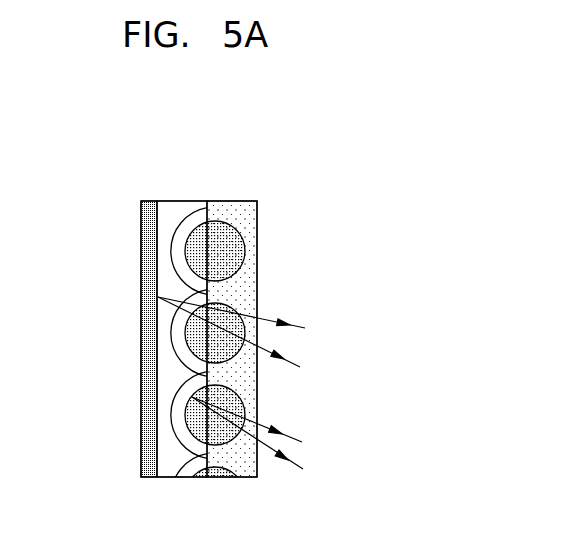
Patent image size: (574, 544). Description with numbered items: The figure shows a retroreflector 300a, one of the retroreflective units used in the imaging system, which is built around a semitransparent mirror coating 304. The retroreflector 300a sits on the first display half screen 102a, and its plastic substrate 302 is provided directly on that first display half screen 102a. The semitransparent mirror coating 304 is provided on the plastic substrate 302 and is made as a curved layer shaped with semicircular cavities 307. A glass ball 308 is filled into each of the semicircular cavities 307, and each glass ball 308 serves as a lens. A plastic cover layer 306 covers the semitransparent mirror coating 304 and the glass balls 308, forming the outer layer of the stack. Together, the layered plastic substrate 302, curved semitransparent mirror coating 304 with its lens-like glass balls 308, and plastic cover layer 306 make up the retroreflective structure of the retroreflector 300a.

The retroreflector 300a is at (316, 180).
The first display half screen 102a is at (148, 210).
The plastic substrate 302 is at (173, 208).
The semitransparent mirror coating 304 is at (180, 242).
The plastic cover layer 306 is at (235, 207).
The semicircular cavities 307 is at (183, 337).
The glass ball 308 is at (190, 258).